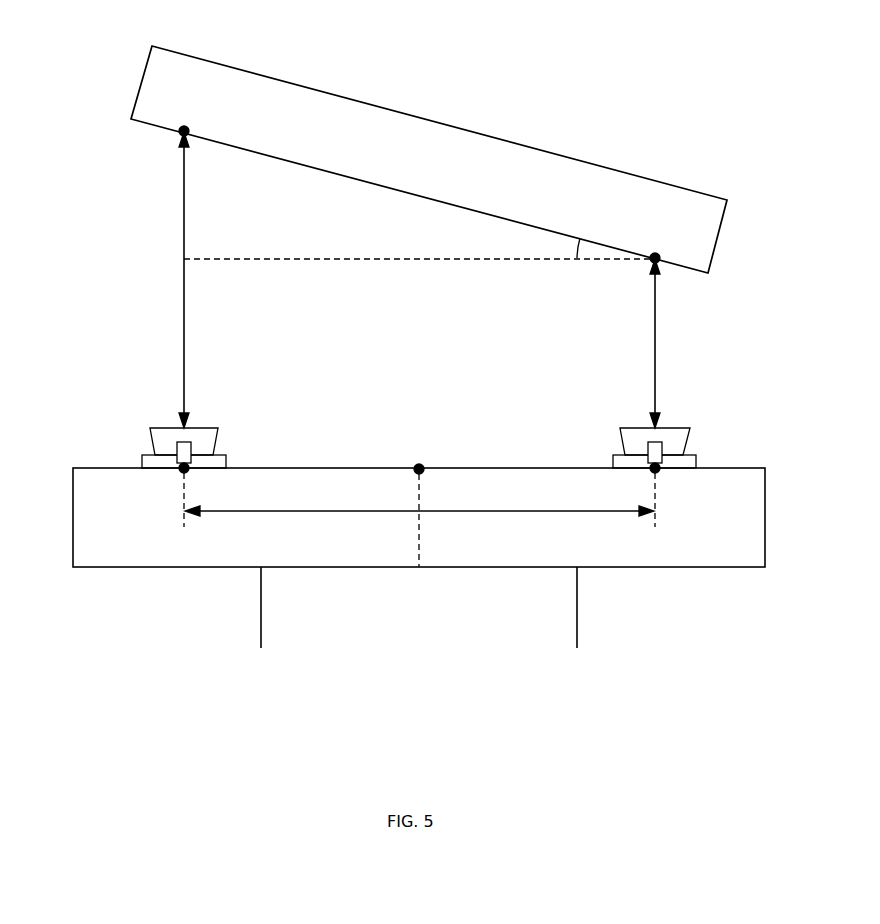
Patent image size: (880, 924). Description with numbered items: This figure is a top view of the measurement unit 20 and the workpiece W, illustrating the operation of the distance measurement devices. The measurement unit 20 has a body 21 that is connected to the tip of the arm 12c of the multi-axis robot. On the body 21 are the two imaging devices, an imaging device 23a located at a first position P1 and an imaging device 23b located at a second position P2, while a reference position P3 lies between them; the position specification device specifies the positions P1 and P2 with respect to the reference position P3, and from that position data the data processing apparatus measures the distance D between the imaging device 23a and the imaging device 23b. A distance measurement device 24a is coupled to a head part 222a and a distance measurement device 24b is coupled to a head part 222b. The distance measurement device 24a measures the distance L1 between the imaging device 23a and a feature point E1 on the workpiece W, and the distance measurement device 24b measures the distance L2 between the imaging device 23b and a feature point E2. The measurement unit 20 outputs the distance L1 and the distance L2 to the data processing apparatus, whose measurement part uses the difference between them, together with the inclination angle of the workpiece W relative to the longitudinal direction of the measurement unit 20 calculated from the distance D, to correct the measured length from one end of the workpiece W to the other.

The workpiece W is at (699, 191).
The measurement unit 20 is at (64, 408).
The body 21 is at (758, 467).
The arm 12c is at (578, 605).
The imaging device 23a is at (200, 427).
The imaging device 23b is at (669, 427).
The head part 222a is at (228, 455).
The head part 222b is at (622, 455).
The distance measurement device 24a is at (177, 452).
The distance measurement device 24b is at (665, 452).
The distance L1 is at (407, 280).
The distance L2 is at (645, 343).
The feature point E1 is at (181, 138).
The feature point E2 is at (652, 266).
The position P1 is at (182, 472).
The position P2 is at (661, 478).
The reference position P3 is at (424, 464).
The distance D is at (419, 502).